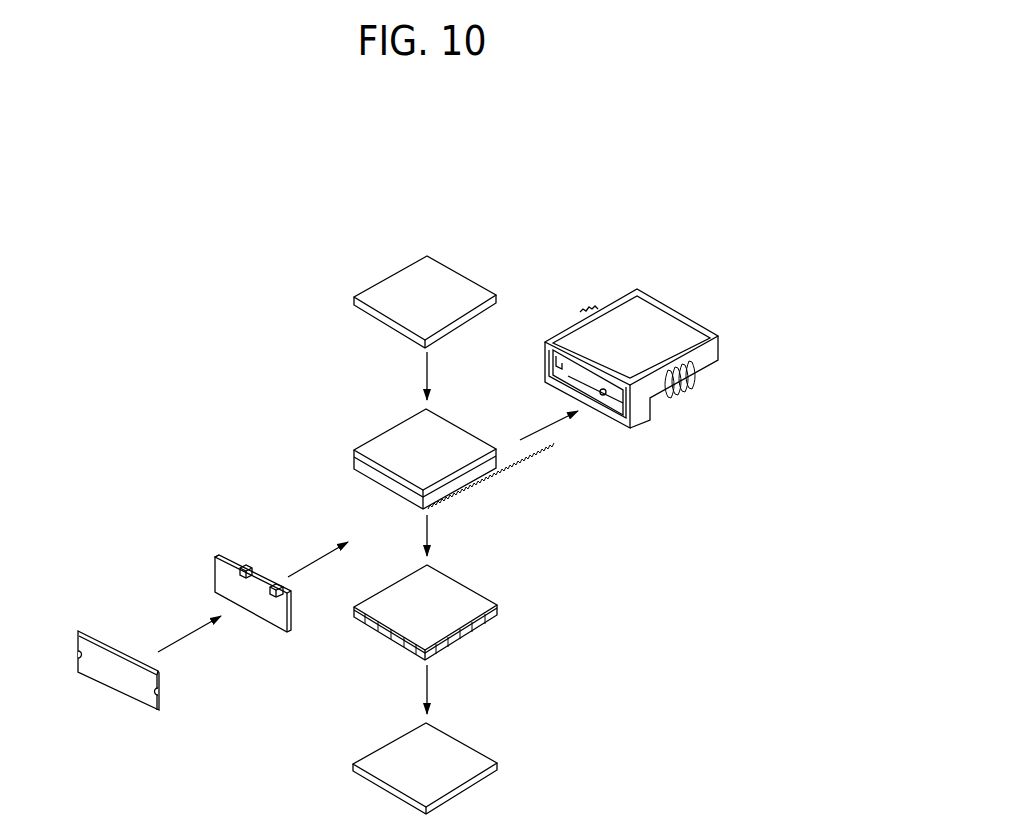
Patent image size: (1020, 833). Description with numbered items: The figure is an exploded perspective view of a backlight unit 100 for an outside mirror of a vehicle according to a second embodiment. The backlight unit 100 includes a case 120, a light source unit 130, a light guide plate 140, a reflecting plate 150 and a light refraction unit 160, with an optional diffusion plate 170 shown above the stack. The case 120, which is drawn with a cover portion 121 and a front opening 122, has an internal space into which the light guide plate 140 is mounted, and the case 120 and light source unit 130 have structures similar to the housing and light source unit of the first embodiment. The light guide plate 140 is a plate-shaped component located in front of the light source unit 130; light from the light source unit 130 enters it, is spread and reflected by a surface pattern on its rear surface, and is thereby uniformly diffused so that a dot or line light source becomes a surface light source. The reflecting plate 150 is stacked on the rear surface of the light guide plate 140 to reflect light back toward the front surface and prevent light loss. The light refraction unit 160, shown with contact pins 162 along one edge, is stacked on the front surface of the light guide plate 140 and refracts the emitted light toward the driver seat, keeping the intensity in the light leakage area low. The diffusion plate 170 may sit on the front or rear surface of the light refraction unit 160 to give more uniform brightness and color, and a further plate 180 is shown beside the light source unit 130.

The backlight unit 100 is at (173, 203).
The case 120 is at (700, 360).
The connector upper cover 121 is at (673, 322).
The connector opening 122 is at (618, 415).
The light source unit 130 is at (207, 540).
The light guide plate 140 is at (458, 607).
The reflecting plate 150 is at (463, 758).
The light refraction unit 160 is at (408, 440).
The housing pins 162 is at (498, 467).
The diffusion plate 170 is at (443, 285).
The side plate 180 is at (132, 682).